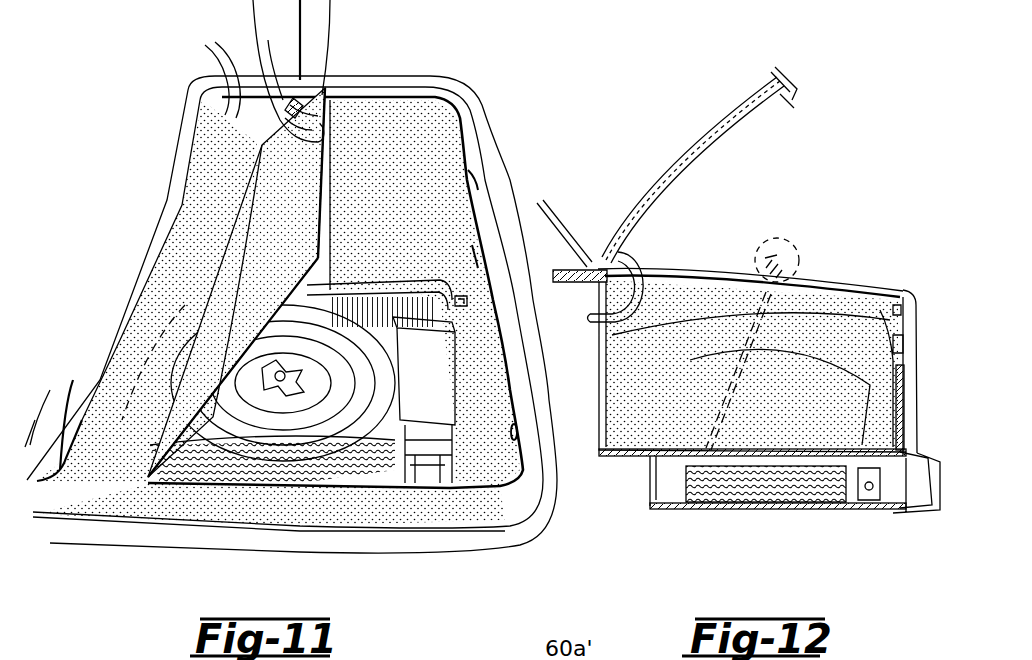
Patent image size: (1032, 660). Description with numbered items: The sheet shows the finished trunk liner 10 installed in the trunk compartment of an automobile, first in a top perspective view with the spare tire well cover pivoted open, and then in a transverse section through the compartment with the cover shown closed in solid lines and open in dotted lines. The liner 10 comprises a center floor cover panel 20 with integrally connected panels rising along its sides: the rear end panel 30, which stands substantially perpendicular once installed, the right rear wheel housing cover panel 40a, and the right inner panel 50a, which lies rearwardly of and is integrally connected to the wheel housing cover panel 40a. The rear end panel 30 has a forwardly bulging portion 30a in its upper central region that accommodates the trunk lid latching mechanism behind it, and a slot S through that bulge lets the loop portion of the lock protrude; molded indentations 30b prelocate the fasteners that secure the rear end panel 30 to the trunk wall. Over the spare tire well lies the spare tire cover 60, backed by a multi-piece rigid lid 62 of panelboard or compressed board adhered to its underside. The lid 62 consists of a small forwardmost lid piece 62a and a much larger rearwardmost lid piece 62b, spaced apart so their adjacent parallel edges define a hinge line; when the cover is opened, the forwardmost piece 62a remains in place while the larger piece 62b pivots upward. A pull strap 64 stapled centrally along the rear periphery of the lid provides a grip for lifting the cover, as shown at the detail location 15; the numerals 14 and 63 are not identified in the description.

In FIG. 11, the trunk liner 10 is at (375, 92).
In FIG. 12, the trunk liner 10 is at (728, 260).
In FIG. 11, the folding direction arrow 14 is at (220, 440).
In FIG. 12, the detail circle 15 is at (797, 246).
In FIG. 11, the center floor cover panel 20 is at (150, 302).
In FIG. 11, the rear end panel 30 is at (452, 215).
In FIG. 12, the rear end panel 30 is at (905, 350).
In FIG. 11, the forwardly bulging portion 30a is at (480, 252).
In FIG. 12, the forwardly bulging portion 30a is at (904, 308).
In FIG. 11, the indentations 30b is at (433, 178).
In FIG. 12, the indentations 30b is at (603, 418).
In FIG. 11, the right rear wheel housing cover panel 40a is at (236, 115).
In FIG. 12, the right rear wheel housing cover panel 40a is at (677, 310).
In FIG. 11, the right inner panel 50a is at (412, 100).
In FIG. 12, the right inner panel 50a is at (848, 290).
In FIG. 11, the spare tire cover 60 is at (278, 259).
In FIG. 12, the spare tire cover 60 is at (772, 468).
In FIG. 12, the rigid lid 62 is at (745, 480).
In FIG. 12, the forwardmost lid piece 62a is at (650, 490).
In FIG. 12, the rearwardmost lid piece 62b is at (795, 504).
In FIG. 11, the panel 63 is at (82, 655).
In FIG. 11, the pull strap 64 is at (296, 58).
In FIG. 12, the pull strap 64 is at (905, 410).
In FIG. 11, the slot S is at (468, 300).